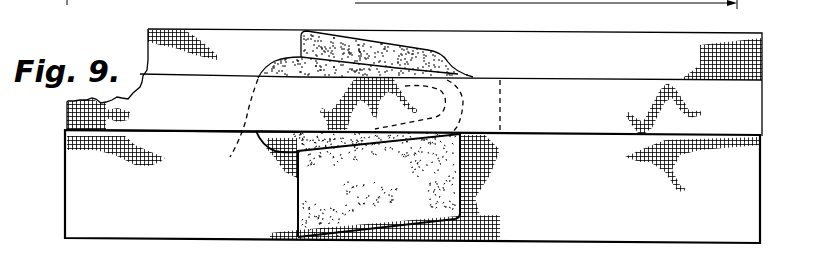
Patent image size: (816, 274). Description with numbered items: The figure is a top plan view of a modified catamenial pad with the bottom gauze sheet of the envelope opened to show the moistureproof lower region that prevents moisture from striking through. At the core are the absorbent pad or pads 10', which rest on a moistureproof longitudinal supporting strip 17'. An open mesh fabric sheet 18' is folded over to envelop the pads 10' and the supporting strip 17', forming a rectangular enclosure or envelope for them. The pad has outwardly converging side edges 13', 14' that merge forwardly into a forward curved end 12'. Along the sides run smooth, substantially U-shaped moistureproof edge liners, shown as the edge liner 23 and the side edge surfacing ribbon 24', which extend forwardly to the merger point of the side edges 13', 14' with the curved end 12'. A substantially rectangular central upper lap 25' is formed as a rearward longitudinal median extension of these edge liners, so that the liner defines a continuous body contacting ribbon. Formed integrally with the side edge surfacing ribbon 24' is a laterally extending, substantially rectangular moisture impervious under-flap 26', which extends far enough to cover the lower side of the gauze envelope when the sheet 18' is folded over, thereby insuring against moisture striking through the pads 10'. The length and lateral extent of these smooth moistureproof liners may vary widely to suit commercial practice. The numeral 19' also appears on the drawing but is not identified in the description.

The absorbent pad 10' is at (360, 57).
The edge liner 23 is at (364, 47).
The side edge 13' is at (379, 41).
The moistureproof longitudinal supporting strip 17' is at (182, 140).
The open mesh fabric sheet 18' is at (395, 186).
The forward curved end 12' is at (340, 125).
The central upper lap 25' is at (467, 106).
The side edge surfacing ribbon 24' is at (271, 161).
The side edge 14' is at (396, 185).
The under-flap 26' is at (385, 240).
The lower element 19' is at (201, 271).